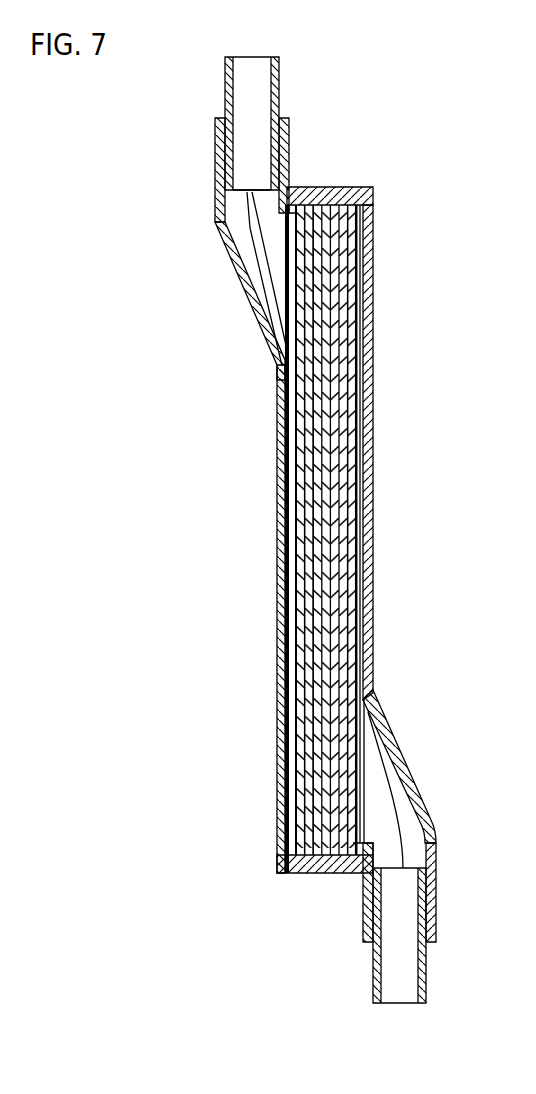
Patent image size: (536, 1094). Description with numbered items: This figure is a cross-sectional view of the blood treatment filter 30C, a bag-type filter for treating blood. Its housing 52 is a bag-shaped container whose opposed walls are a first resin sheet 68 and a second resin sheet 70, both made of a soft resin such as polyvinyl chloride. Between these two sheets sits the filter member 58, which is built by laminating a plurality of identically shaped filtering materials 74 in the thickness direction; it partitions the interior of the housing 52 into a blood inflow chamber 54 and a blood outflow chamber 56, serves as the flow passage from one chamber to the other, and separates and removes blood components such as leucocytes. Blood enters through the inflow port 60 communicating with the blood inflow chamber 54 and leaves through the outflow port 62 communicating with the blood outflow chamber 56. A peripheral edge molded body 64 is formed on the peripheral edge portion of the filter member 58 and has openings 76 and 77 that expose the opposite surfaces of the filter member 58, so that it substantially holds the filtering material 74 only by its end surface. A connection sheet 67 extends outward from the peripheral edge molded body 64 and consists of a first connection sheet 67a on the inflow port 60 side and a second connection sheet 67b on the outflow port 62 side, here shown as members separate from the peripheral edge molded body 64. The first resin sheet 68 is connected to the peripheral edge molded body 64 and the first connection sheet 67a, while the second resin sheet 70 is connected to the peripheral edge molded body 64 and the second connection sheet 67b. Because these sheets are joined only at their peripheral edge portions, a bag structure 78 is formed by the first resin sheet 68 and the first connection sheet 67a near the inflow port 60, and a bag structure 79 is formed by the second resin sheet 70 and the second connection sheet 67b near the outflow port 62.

The blood treatment filter 30C is at (103, 124).
The housing 52 is at (272, 451).
The blood inflow chamber 54 is at (294, 545).
The blood outflow chamber 56 is at (359, 562).
The filter member 58 is at (327, 530).
The inflow port 60 is at (279, 79).
The outflow port 62 is at (373, 972).
The peripheral edge molded body 64 is at (348, 184).
The connection sheet 67 is at (211, 130).
The first connection sheet 67a is at (284, 138).
The second connection sheet 67b is at (362, 903).
The first resin sheet 68 is at (283, 505).
The second resin sheet 70 is at (368, 401).
The filtering material 74 is at (351, 480).
The opening 76 is at (294, 412).
The opening 77 is at (359, 265).
The bag structure 78 is at (235, 258).
The bag structure 79 is at (404, 762).